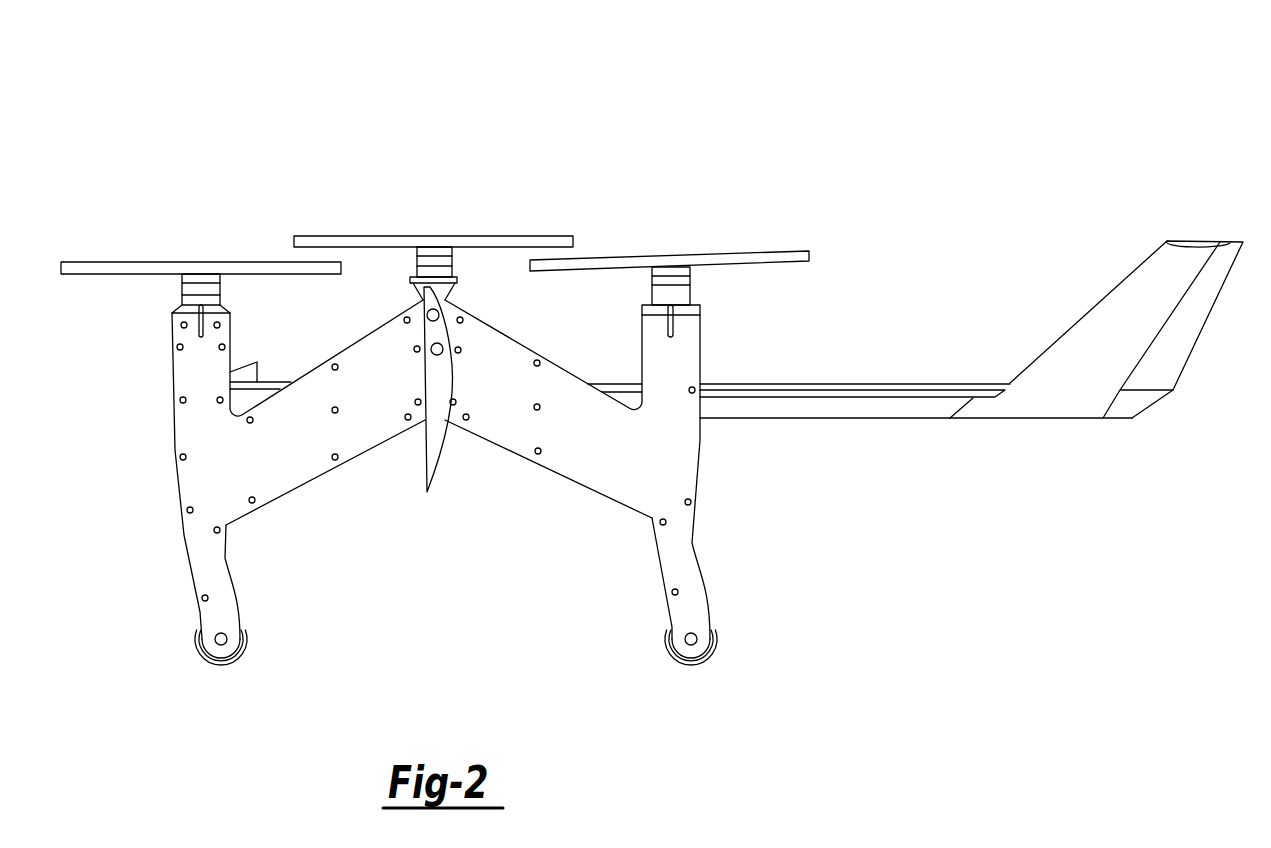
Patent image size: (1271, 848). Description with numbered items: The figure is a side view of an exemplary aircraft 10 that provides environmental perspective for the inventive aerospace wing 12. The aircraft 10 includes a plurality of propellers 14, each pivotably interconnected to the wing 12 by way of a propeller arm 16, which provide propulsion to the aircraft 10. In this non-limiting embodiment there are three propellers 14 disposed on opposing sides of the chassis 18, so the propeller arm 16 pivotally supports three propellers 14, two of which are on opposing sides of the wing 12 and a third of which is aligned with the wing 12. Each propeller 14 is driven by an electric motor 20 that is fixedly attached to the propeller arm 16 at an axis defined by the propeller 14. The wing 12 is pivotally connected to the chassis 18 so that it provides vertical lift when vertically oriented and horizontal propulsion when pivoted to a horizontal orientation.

The aircraft 10 is at (1151, 76).
The aerospace wing 12 is at (437, 378).
The propeller 14 is at (202, 262).
The propeller arm 16 is at (598, 478).
The chassis 18 is at (829, 404).
The electric motor 20 is at (221, 283).